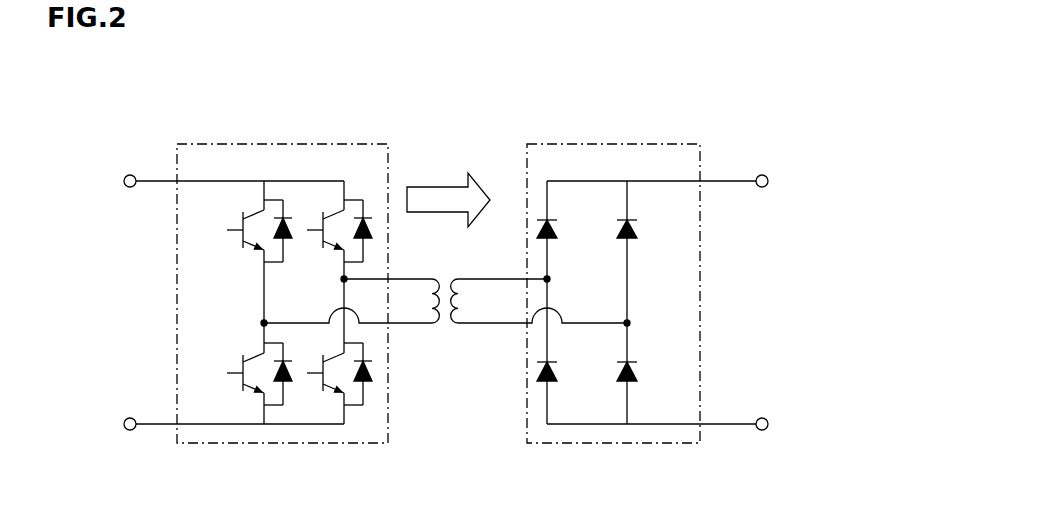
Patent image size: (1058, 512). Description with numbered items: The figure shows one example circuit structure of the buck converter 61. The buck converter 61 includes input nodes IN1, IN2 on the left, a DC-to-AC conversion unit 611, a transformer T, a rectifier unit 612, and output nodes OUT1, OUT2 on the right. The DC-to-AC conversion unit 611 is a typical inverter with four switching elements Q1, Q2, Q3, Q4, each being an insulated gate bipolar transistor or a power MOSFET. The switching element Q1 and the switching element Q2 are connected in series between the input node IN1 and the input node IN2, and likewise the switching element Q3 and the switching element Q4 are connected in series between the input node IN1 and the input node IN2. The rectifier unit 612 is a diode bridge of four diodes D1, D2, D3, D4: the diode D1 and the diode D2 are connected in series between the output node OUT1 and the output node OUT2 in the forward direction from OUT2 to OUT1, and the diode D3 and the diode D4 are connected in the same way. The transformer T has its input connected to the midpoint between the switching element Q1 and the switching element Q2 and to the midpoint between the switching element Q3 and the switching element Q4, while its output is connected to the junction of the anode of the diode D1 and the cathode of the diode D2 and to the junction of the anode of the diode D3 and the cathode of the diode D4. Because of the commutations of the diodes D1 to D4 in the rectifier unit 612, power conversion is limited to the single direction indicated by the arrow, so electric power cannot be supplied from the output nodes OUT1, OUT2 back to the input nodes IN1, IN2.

The buck converter 61 is at (574, 84).
The DC-to-AC conversion unit 611 is at (343, 144).
The rectifier unit 612 is at (657, 144).
The switching element Q1 is at (241, 218).
The switching element Q2 is at (241, 363).
The switching element Q3 is at (321, 221).
The switching element Q4 is at (321, 364).
The transformer T is at (476, 277).
The diode D1 is at (560, 232).
The diode D2 is at (560, 377).
The diode D3 is at (639, 232).
The diode D4 is at (639, 377).
The input node IN1 is at (123, 181).
The input node IN2 is at (123, 424).
The output node OUT1 is at (770, 182).
The output node OUT2 is at (770, 424).